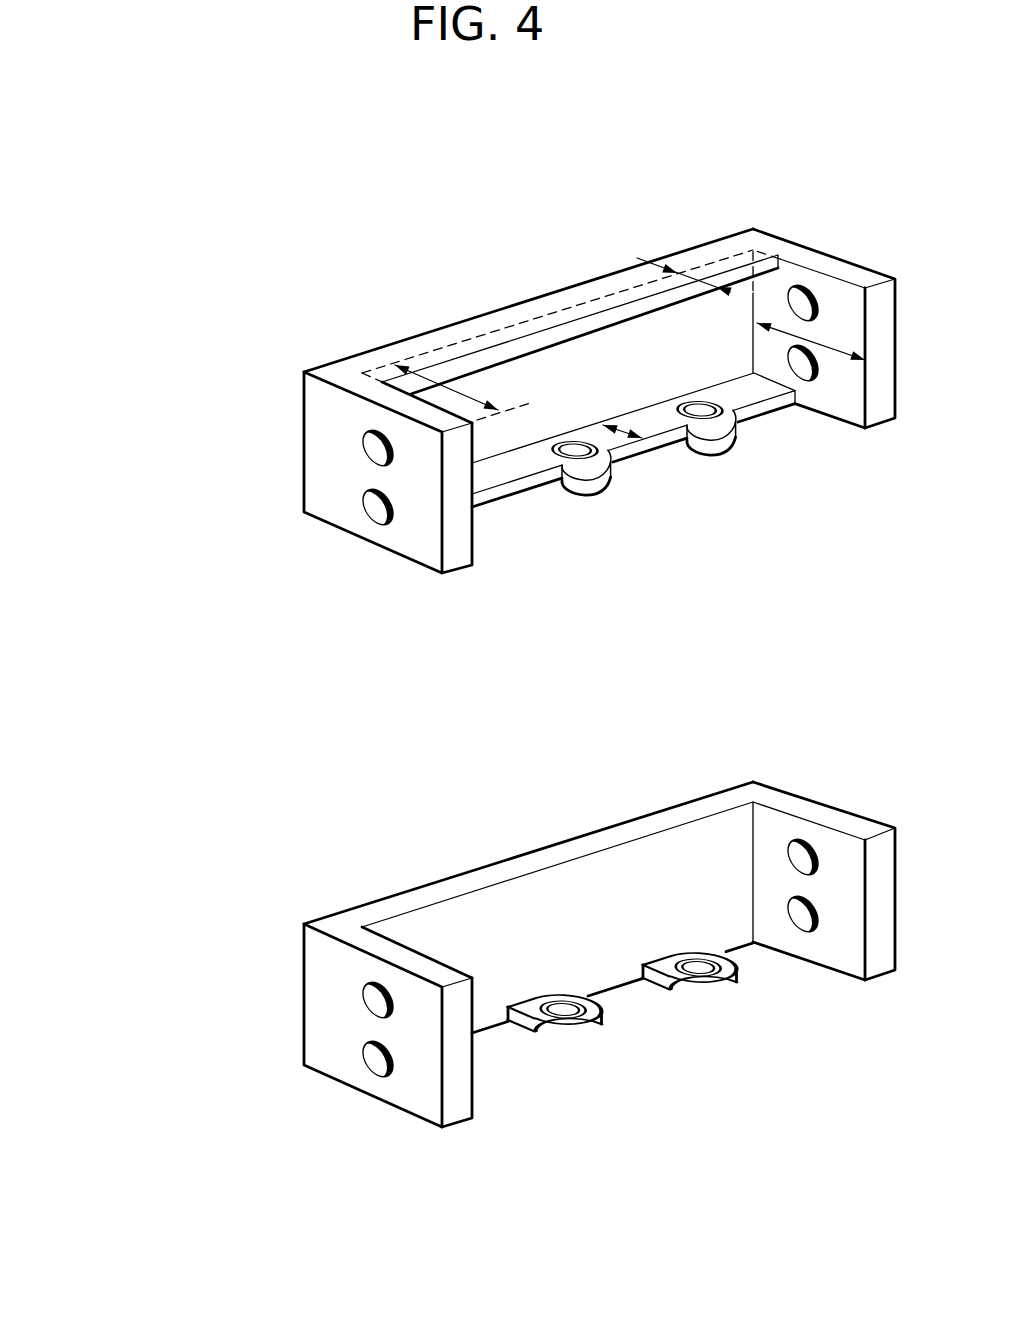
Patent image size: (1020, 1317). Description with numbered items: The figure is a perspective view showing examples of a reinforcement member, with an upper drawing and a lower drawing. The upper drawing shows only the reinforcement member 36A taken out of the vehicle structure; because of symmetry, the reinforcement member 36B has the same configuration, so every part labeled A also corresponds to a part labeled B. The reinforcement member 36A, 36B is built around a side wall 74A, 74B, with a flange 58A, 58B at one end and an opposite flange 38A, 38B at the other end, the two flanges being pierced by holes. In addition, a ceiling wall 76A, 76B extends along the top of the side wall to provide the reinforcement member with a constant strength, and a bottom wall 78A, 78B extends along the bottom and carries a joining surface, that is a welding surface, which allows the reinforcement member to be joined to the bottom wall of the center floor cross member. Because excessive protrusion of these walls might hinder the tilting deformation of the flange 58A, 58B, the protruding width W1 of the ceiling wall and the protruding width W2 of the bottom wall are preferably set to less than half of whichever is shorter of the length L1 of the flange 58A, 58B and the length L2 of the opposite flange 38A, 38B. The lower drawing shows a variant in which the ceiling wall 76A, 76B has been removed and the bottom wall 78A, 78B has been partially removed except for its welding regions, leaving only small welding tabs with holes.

The reinforcement member 36A is at (471, 677).
The reinforcement member 36B is at (240, 378).
The opposite flange 38A is at (407, 783).
The opposite flange 38B is at (420, 548).
The flange 58A is at (824, 570).
The flange 58B is at (848, 270).
The side wall 74A is at (549, 631).
The side wall 74B is at (511, 425).
The ceiling wall 76A is at (560, 333).
The ceiling wall 76B is at (548, 325).
The bottom wall 78A is at (683, 747).
The bottom wall 78B is at (643, 445).
The protruding width of the ceiling wall W1 is at (682, 258).
The protruding width of the bottom wall W2 is at (625, 413).
The length of the flange L1 is at (811, 338).
The length of the opposite flange L2 is at (454, 387).